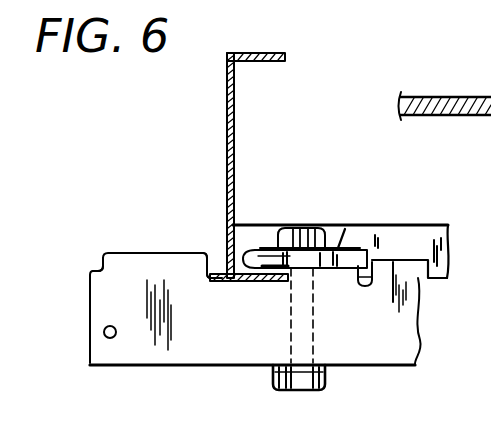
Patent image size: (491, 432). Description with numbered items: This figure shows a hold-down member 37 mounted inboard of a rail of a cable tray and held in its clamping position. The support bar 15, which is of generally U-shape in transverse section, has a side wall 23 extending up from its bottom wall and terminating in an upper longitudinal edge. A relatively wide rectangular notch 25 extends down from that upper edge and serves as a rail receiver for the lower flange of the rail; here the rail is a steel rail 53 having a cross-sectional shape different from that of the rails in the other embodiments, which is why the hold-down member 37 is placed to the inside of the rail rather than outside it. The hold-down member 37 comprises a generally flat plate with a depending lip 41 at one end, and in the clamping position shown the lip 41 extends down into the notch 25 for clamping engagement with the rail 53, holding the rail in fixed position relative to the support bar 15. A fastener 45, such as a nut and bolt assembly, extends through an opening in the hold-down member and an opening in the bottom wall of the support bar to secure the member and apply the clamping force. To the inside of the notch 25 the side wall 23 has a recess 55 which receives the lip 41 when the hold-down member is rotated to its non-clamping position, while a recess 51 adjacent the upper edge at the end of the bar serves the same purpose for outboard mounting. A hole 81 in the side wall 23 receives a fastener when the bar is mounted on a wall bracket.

The support bar 15 is at (367, 368).
The side wall 23 is at (399, 336).
The notch 25 is at (213, 278).
The hold-down member 37 is at (348, 227).
The lip 41 is at (273, 281).
The fastener 45 is at (300, 228).
The recess 51 is at (100, 270).
The steel rail 53 is at (226, 118).
The recess 55 is at (383, 261).
The hole 81 is at (104, 332).